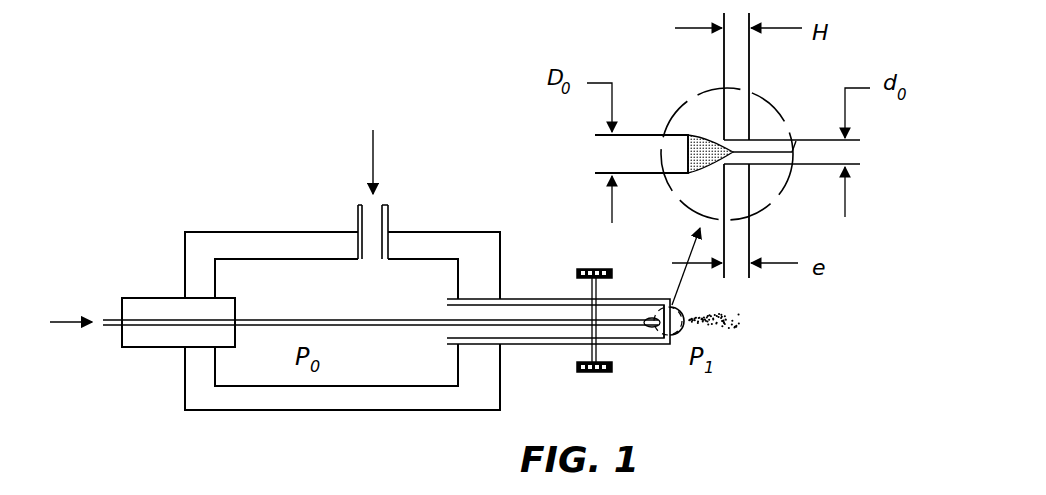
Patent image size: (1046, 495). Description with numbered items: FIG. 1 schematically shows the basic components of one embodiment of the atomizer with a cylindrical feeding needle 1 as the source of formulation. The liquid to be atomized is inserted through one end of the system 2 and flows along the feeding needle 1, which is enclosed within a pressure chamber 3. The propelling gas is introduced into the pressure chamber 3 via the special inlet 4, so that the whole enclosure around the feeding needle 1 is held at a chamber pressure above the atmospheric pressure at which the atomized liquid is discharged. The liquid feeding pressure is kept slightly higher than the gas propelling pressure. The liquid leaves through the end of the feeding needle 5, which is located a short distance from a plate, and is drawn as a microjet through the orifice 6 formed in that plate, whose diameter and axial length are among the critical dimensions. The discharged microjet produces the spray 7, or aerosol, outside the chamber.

The feeding needle 1 is at (318, 327).
The end of the feeding needle used to insert the liquid 2 is at (68, 320).
The pressure chamber 3 is at (390, 385).
The orifice used as gas inlet 4 is at (373, 160).
The end of the feeding needle used to evacuate the liquid 5 is at (640, 167).
The orifice through which withdrawal takes place 6 is at (771, 137).
The atomizate (spray) 7 is at (758, 335).